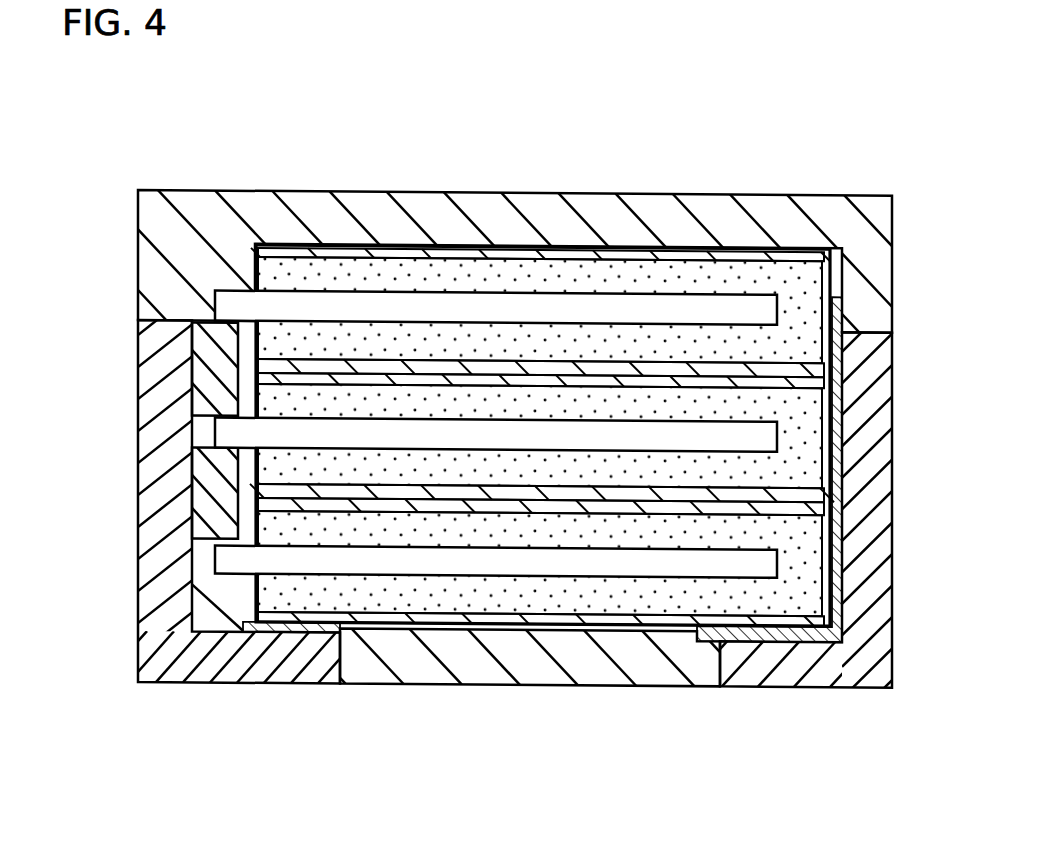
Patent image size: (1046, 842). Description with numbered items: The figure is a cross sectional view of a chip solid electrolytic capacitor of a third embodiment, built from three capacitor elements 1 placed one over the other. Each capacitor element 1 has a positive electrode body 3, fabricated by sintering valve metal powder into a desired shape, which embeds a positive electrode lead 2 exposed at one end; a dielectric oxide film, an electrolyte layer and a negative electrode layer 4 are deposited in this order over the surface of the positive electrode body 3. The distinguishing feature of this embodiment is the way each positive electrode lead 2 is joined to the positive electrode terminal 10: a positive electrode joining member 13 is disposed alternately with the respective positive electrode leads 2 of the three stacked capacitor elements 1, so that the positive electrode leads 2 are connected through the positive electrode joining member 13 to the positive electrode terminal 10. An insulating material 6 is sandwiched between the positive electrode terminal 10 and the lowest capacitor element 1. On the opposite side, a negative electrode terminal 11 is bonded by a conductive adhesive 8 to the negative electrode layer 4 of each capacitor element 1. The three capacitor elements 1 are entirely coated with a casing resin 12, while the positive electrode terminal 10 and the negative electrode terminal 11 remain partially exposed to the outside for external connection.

The capacitor element 1 is at (623, 243).
The positive electrode lead 2 is at (242, 291).
The positive electrode body 3 is at (322, 272).
The negative electrode layer 4 is at (423, 251).
The insulating material 6 is at (310, 626).
The conductive adhesive 8 is at (834, 317).
The positive electrode terminal 10 is at (210, 664).
The negative electrode terminal 11 is at (787, 672).
The casing resin 12 is at (742, 218).
The positive electrode joining member 13 is at (212, 361).